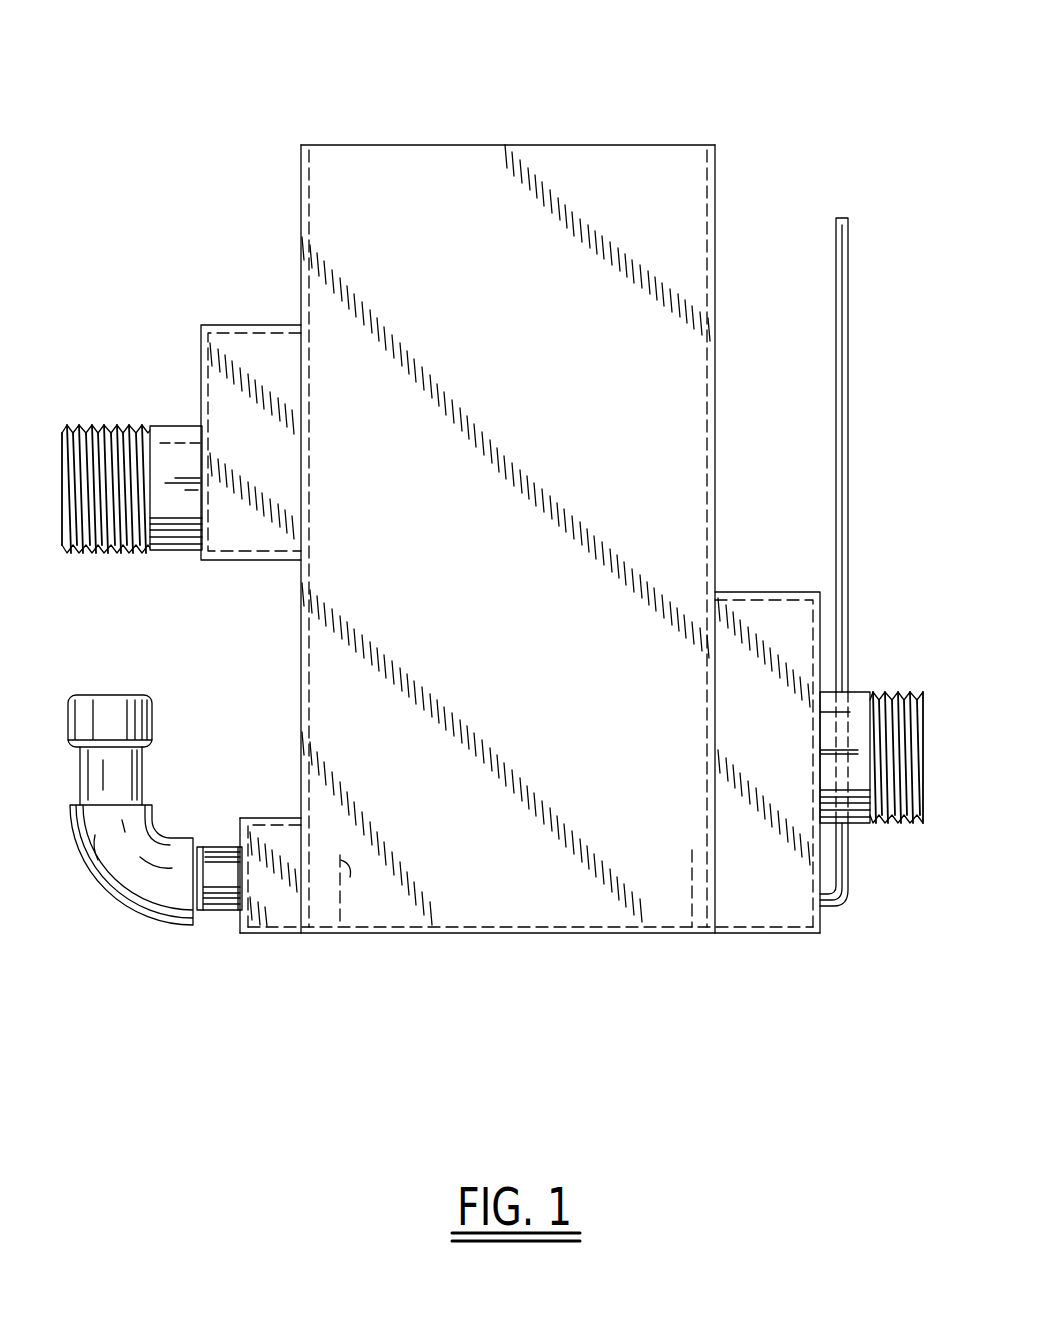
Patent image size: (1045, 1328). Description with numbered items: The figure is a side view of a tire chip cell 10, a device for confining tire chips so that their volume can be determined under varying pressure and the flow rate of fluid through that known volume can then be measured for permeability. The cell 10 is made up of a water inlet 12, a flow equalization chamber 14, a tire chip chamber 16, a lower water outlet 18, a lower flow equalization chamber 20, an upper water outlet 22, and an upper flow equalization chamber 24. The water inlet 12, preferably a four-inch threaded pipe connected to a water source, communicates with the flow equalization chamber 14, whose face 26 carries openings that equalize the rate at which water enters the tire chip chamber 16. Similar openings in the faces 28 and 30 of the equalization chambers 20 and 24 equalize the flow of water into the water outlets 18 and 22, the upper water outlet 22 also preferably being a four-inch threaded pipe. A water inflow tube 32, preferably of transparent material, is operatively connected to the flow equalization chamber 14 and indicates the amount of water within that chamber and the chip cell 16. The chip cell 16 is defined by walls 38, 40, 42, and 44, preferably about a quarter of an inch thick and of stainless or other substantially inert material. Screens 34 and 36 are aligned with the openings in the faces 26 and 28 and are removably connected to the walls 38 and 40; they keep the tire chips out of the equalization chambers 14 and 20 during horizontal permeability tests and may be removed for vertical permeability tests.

The tire chip cell 10 is at (563, 75).
The water inlet 12 is at (922, 694).
The flow equalization chamber 14 is at (787, 897).
The tire chip chamber 16 is at (582, 897).
The lower water outlet 18 is at (116, 907).
The lower flow equalization chamber 20 is at (283, 936).
The upper water outlet 22 is at (166, 553).
The upper flow equalization chamber 24 is at (255, 343).
The face 26 is at (714, 788).
The face 28 is at (301, 830).
The face 30 is at (304, 378).
The water inflow tube 32 is at (848, 335).
The screen 34 is at (690, 886).
The screen 36 is at (364, 891).
The wall 38 is at (716, 190).
The wall 40 is at (299, 188).
The wall 42 is at (415, 145).
The wall 44 is at (463, 935).